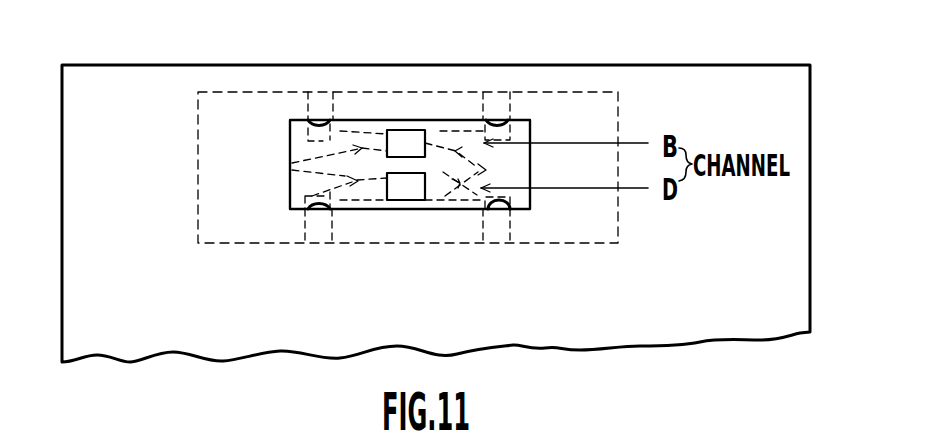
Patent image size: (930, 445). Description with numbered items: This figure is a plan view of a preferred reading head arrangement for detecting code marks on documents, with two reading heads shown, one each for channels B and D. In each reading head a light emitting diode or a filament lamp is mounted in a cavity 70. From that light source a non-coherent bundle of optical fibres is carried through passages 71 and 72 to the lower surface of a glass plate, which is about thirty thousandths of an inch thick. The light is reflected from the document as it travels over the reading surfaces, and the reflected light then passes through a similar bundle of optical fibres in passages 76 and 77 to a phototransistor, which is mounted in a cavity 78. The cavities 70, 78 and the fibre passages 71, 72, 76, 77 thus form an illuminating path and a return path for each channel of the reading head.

The cavity 70 is at (316, 104).
The passage 71 is at (296, 168).
The passage 72 is at (394, 130).
The passage 76 is at (420, 130).
The passage 77 is at (504, 166).
The cavity 78 is at (497, 100).